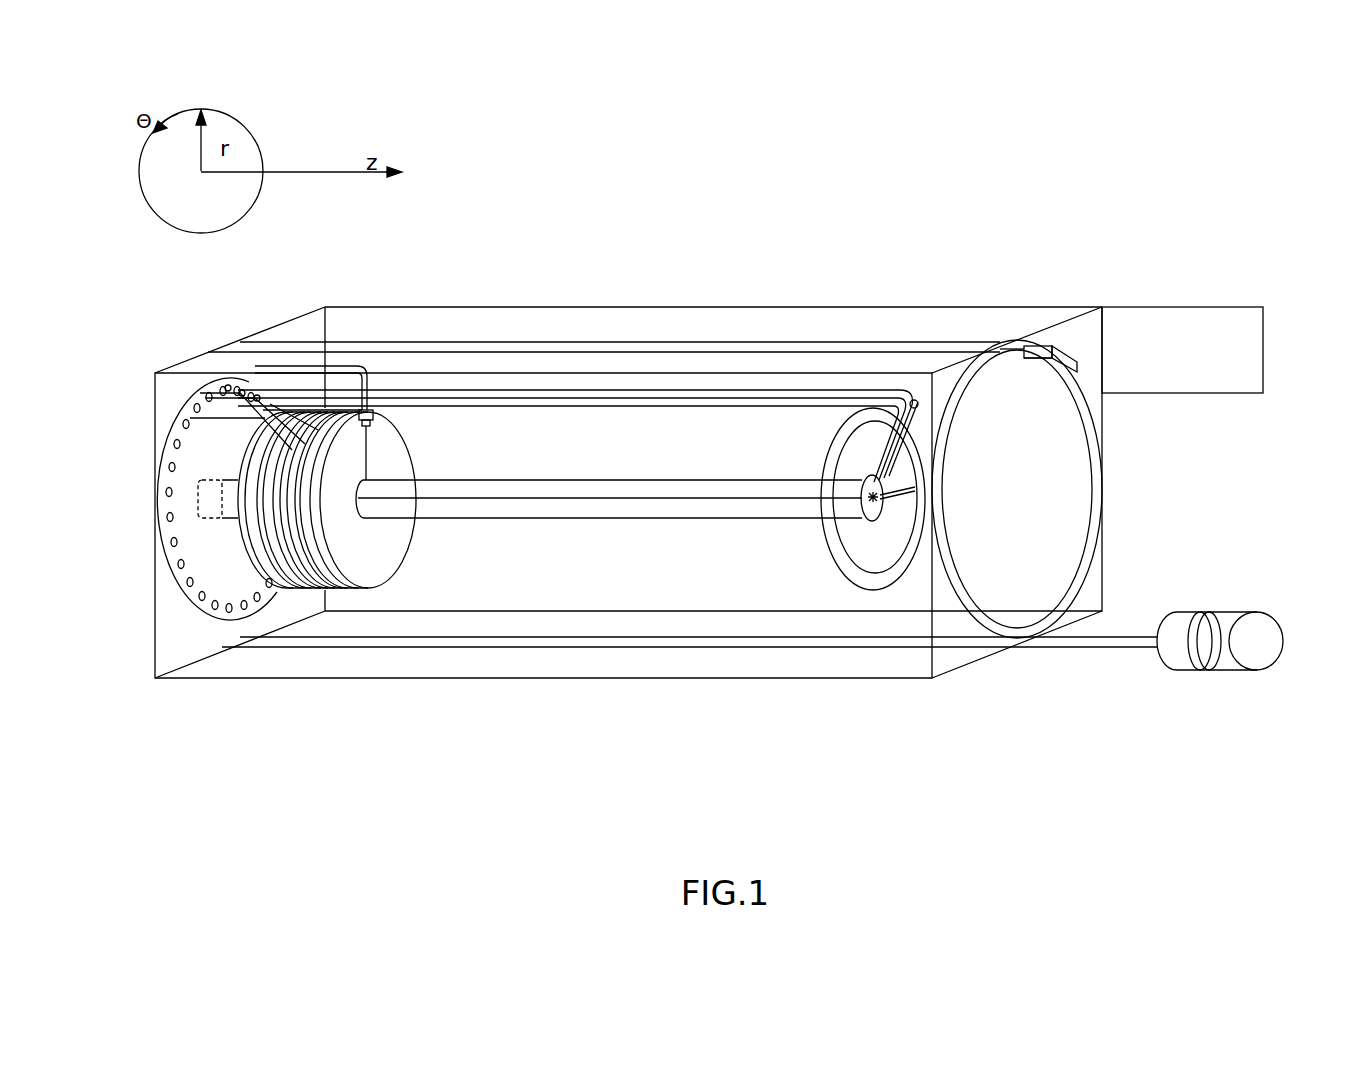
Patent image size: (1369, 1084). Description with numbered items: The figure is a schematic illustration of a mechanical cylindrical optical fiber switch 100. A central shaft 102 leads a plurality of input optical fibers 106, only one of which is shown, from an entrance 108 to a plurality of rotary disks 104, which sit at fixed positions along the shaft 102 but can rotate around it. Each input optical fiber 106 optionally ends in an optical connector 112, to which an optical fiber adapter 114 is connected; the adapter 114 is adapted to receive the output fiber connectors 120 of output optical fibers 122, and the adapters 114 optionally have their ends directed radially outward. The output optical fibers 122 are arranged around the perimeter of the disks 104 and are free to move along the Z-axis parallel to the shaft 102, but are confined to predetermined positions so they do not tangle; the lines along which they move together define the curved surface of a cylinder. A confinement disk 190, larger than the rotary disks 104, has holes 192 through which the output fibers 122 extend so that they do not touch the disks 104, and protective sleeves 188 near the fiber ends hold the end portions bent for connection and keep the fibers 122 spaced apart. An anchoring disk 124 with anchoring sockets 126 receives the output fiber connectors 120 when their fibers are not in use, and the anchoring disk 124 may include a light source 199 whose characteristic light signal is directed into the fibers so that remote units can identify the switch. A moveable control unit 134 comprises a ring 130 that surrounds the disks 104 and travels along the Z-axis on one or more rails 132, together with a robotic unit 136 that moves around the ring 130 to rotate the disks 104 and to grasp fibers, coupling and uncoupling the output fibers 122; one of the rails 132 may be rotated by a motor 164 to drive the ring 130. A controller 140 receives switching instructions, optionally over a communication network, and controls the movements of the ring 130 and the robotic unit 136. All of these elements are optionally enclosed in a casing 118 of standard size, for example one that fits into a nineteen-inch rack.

The mechanical optical fiber switch 100 is at (1142, 180).
The central shaft 102 is at (540, 480).
The rotary disks 104 is at (405, 537).
The input optical fibers 106 is at (368, 467).
The entrance 108 is at (215, 497).
The optical connector 112 is at (380, 418).
The optical fiber adapter 114 is at (372, 408).
The casing 118 is at (660, 307).
The output fiber connectors 120 is at (258, 368).
The output optical fibers 122 is at (300, 388).
The anchoring disk 124 is at (885, 548).
The anchoring sockets 126 is at (872, 402).
The ring 130 is at (1100, 430).
The rails 132 is at (535, 342).
The moveable control unit 134 is at (1064, 332).
The robotic unit 136 is at (1040, 347).
The controller 140 is at (1160, 307).
The motor 164 is at (1230, 612).
The protective sleeve 188 is at (918, 400).
The confinement disk 190 is at (222, 620).
The holes 192 is at (162, 446).
The light source 199 is at (880, 520).